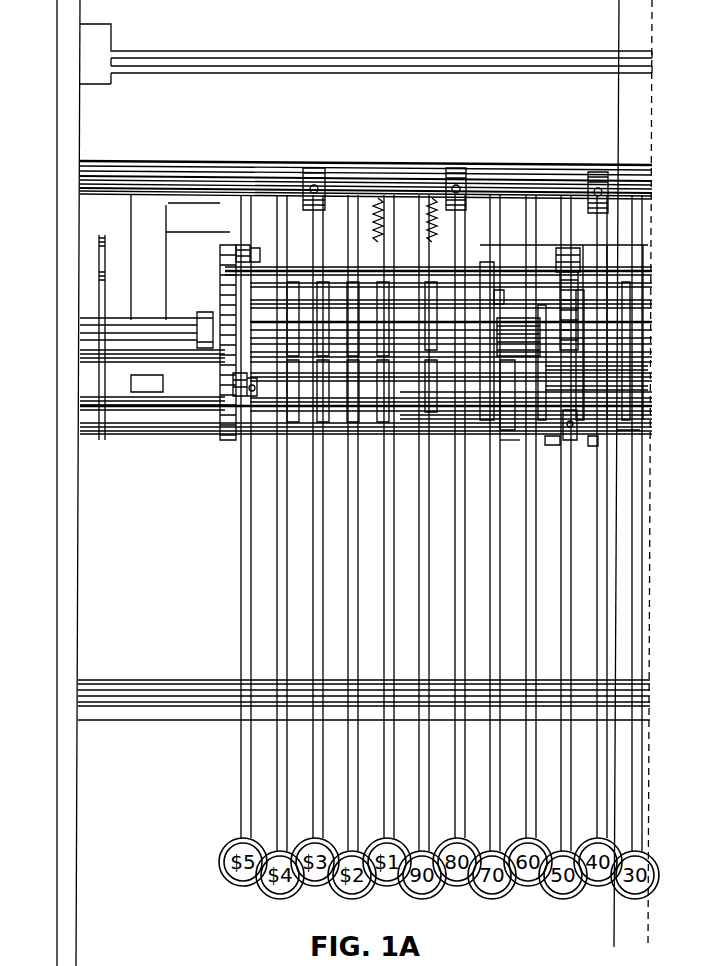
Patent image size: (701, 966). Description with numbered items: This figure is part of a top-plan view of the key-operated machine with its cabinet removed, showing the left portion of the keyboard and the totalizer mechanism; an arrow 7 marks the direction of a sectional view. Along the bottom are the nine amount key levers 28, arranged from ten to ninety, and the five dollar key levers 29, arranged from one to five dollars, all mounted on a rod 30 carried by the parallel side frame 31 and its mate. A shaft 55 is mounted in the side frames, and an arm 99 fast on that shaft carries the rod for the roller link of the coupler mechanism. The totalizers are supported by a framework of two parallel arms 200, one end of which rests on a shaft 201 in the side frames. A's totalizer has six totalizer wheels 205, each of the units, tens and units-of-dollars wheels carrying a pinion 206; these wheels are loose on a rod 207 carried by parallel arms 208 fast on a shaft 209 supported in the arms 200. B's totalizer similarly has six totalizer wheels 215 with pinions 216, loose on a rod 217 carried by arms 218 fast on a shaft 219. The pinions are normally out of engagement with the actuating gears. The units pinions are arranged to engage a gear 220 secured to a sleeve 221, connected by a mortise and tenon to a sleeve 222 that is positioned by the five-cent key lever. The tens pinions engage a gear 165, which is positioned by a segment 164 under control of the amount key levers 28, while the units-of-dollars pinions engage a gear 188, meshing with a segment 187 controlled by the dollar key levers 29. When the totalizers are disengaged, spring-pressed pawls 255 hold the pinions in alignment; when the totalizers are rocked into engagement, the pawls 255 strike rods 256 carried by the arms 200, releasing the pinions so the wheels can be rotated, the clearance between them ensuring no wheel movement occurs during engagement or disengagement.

The section line 7 is at (630, 928).
The amount key levers 28 is at (597, 780).
The key levers 29 is at (386, 760).
The rod 30 is at (151, 436).
The side frame 31 is at (76, 556).
The shaft 55 is at (622, 375).
The arm 99 is at (106, 270).
The segment 164 is at (443, 222).
The gear 165 is at (432, 368).
The segment 187 is at (396, 215).
The gear 188 is at (353, 353).
The arms 200 is at (220, 293).
The shaft 201 is at (78, 329).
The totalizer wheels 205 is at (466, 410).
The pinion 206 is at (490, 414).
The rod 207 is at (560, 412).
The arms 208 is at (233, 384).
The shaft 209 is at (628, 412).
The totalizer wheels 215 is at (487, 300).
The pinion 216 is at (503, 336).
The rod 217 is at (541, 323).
The arms 218 is at (238, 250).
The shaft 219 is at (626, 290).
The gear 220 is at (447, 398).
The sleeve 221 is at (512, 414).
The sleeve 222 is at (580, 338).
The spring-pressed pawls 255 is at (504, 300).
The rods 256 is at (225, 271).